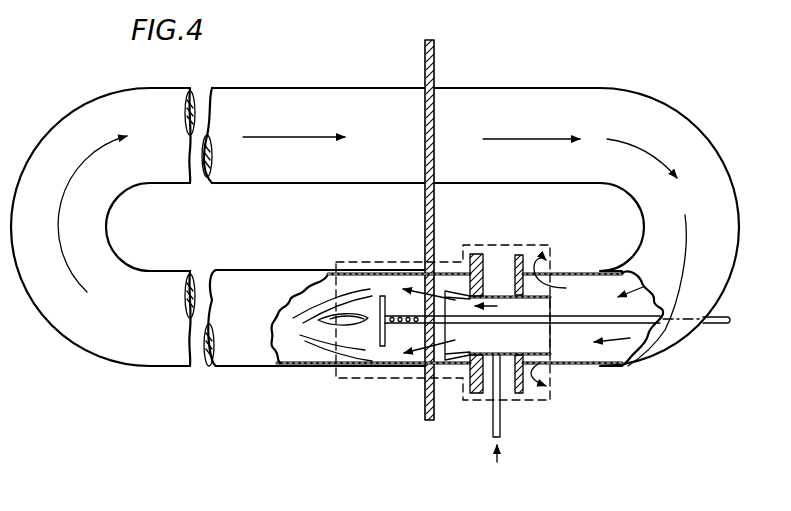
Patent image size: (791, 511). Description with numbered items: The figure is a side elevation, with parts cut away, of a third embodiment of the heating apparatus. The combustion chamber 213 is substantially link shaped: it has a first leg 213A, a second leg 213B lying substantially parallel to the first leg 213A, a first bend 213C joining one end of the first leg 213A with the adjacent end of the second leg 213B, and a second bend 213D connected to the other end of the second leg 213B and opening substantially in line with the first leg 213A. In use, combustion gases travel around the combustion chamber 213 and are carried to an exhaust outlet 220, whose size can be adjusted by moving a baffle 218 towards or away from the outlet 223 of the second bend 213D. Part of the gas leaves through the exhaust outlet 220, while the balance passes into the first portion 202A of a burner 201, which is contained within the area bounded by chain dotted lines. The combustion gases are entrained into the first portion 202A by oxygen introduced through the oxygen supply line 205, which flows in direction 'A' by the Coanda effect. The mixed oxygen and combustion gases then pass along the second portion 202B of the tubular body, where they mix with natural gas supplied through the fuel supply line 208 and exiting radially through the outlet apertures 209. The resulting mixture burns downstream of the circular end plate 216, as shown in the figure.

The burner 201 is at (349, 262).
The first portion of the burner 202A is at (492, 288).
The second portion of the tubular body 202B is at (401, 273).
The oxygen supply line 205 is at (492, 428).
The fuel supply line 208 is at (577, 325).
The outlet apertures 209 is at (402, 325).
The combustion chamber 213 is at (106, 366).
The first leg 213A is at (231, 367).
The second leg 213B is at (398, 129).
The first bend 213C is at (108, 214).
The second bend 213D is at (643, 213).
The circular end plate 216 is at (380, 325).
The baffle 218 is at (498, 262).
The exhaust outlet 220 is at (530, 266).
The outlet of the bend 223 is at (550, 258).